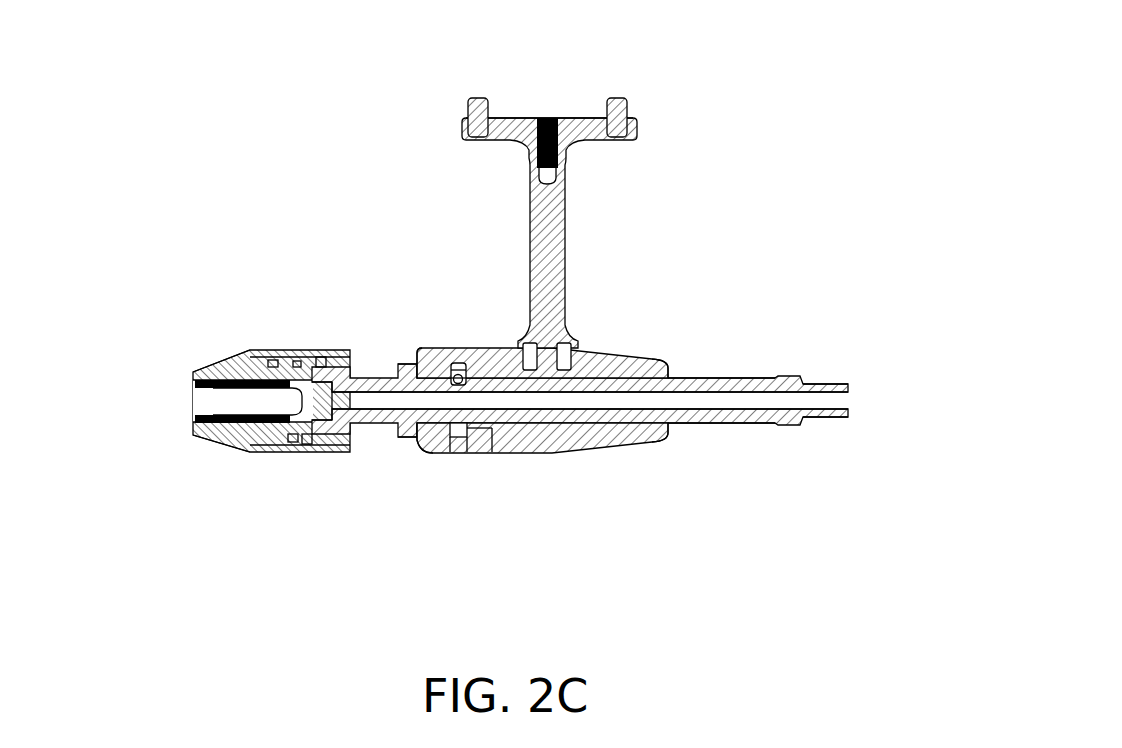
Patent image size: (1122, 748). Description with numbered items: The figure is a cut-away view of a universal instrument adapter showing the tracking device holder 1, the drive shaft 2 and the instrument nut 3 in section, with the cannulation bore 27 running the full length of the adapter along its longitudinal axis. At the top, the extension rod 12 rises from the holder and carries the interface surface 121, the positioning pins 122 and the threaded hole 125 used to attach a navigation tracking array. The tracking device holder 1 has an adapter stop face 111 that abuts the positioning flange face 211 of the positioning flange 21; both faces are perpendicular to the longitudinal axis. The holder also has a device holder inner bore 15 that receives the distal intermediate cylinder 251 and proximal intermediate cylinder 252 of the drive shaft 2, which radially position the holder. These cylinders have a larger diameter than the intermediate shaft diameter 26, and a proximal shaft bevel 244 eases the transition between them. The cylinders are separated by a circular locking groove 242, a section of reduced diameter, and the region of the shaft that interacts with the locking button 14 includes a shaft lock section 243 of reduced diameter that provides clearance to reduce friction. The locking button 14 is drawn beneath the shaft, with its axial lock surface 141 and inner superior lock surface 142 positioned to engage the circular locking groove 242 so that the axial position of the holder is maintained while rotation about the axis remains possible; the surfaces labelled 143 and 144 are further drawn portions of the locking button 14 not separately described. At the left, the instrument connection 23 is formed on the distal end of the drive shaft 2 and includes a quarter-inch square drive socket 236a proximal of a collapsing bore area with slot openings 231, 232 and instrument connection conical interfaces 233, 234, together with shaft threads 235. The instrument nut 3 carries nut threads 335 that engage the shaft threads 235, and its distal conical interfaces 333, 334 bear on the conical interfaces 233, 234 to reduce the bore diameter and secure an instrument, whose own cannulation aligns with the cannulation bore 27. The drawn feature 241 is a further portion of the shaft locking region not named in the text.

The tracking device holder 1 is at (665, 440).
The drive shaft 2 is at (742, 372).
The instrument nut 3 is at (263, 343).
The extension rod 12 is at (567, 235).
The locking button 14 is at (473, 455).
The device holder inner bore 15 is at (605, 375).
The positioning flange 21 is at (408, 436).
The instrument connection 23 is at (215, 405).
The intermediate shaft diameter 26 is at (693, 422).
The cannulation bore 27 is at (810, 403).
The adapter stop face 111 is at (414, 438).
The interface surface 121 is at (517, 118).
The positioning pins 122 is at (480, 110).
The threaded hole 125 is at (548, 118).
The axial lock surface 141 is at (458, 377).
The inner superior lock surface 142 is at (462, 438).
The block 143 is at (495, 450).
The recess wall 144 is at (450, 440).
The positioning flange face 211 is at (412, 440).
The slot opening 231 is at (258, 448).
The slot opening 232 is at (198, 430).
The instrument connection conical interface 233 is at (205, 367).
The instrument connection conical interface 234 is at (273, 367).
The shaft threads 235 is at (322, 360).
The square drive socket 236a is at (307, 437).
The pin head 241 is at (467, 377).
The circular locking groove 242 is at (457, 370).
The shaft lock section 243 is at (492, 438).
The proximal shaft bevel 244 is at (672, 380).
The distal intermediate cylinder 251 is at (423, 353).
The proximal intermediate cylinder 252 is at (658, 362).
The distal conical interface 333 is at (228, 358).
The distal conical interface 334 is at (297, 367).
The nut threads 335 is at (293, 433).